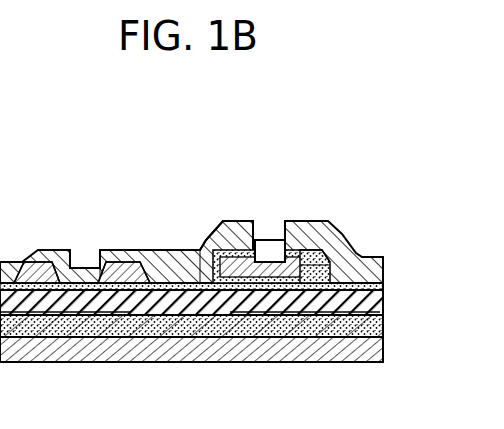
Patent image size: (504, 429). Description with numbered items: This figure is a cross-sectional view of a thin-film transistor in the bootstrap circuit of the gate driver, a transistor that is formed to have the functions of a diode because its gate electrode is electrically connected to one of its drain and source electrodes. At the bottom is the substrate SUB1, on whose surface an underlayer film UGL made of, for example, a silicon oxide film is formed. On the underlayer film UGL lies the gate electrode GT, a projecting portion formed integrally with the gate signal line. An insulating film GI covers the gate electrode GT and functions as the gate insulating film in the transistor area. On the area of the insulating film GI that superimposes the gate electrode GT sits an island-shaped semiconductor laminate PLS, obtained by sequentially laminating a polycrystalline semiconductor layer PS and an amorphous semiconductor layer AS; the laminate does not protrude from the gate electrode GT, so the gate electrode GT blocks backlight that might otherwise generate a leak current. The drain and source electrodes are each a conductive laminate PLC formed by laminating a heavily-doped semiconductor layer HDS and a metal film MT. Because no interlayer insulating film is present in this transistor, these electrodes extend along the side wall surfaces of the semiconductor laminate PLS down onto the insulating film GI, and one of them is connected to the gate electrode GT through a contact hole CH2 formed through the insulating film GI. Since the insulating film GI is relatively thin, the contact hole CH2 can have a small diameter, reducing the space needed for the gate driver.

The conductive laminate PLC is at (12, 140).
The metal film MT is at (125, 260).
The heavily-doped semiconductor layer HDS is at (147, 272).
The contact hole CH2 is at (40, 262).
The amorphous semiconductor layer AS is at (320, 250).
The polycrystalline semiconductor layer PS is at (315, 272).
The semiconductor laminate PLS is at (400, 184).
The insulating film GI is at (380, 303).
The underlayer film UGL is at (383, 323).
The gate electrode GT is at (62, 318).
The substrate SUB1 is at (133, 358).